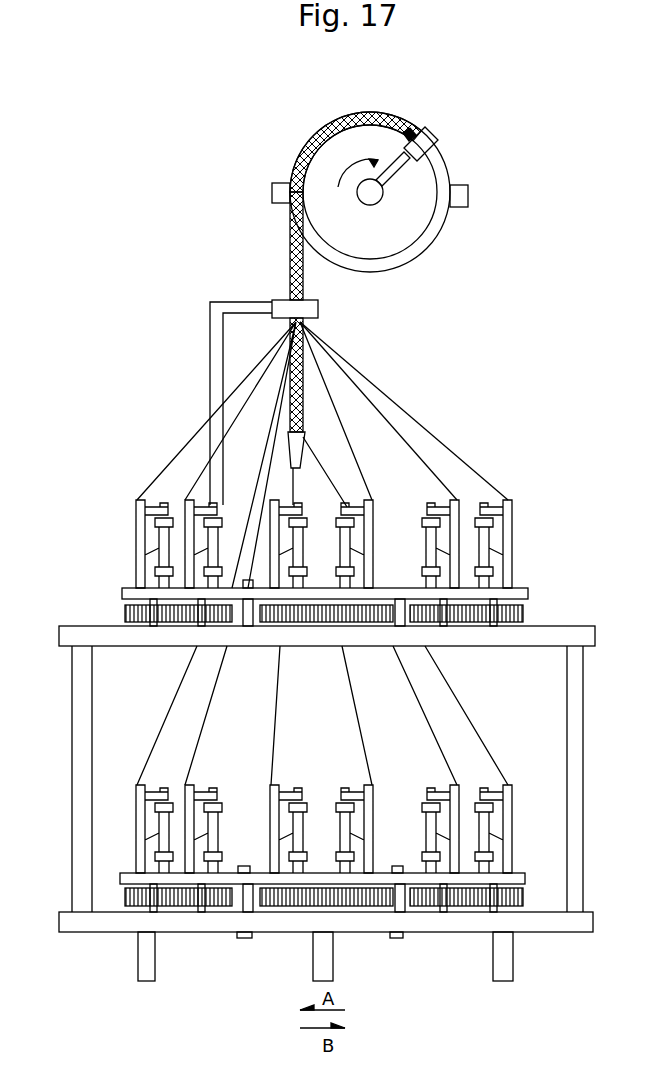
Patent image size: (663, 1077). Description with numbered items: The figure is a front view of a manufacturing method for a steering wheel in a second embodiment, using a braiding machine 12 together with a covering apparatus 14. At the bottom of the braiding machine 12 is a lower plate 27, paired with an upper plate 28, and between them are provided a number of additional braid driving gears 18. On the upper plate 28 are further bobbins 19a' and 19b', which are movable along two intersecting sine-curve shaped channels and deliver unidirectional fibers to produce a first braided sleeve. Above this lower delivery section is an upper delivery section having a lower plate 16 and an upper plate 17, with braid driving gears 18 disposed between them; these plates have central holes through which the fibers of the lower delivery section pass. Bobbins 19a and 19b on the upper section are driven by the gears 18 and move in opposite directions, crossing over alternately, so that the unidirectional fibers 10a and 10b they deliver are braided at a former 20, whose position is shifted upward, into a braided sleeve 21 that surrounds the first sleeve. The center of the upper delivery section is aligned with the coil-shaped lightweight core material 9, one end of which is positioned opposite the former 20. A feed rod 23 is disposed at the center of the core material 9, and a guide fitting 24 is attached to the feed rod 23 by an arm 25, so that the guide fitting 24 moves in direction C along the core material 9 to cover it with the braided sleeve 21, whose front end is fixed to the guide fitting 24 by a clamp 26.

The covering apparatus 14 is at (388, 186).
The coil-shaped lightweight core material 9 is at (447, 226).
The feed rod 23 is at (376, 198).
The arm 25 is at (410, 168).
The guide fitting 24 is at (437, 138).
The clamp 26 is at (416, 128).
The braided sleeve 21 is at (287, 280).
The former 20 is at (318, 308).
The braiding machine 12 is at (210, 381).
The unidirectional fibers 10a is at (413, 425).
The unidirectional fibers 10b is at (377, 408).
The bobbins 19a is at (530, 544).
The bobbins 19b is at (419, 544).
The upper plate 17 is at (524, 596).
The braid driving gears 18 is at (525, 613).
The lower plate 16 is at (497, 640).
The bobbins 19a' is at (521, 829).
The bobbins 19b' is at (418, 829).
The upper plate 28 is at (517, 877).
The lower plate 27 is at (453, 927).